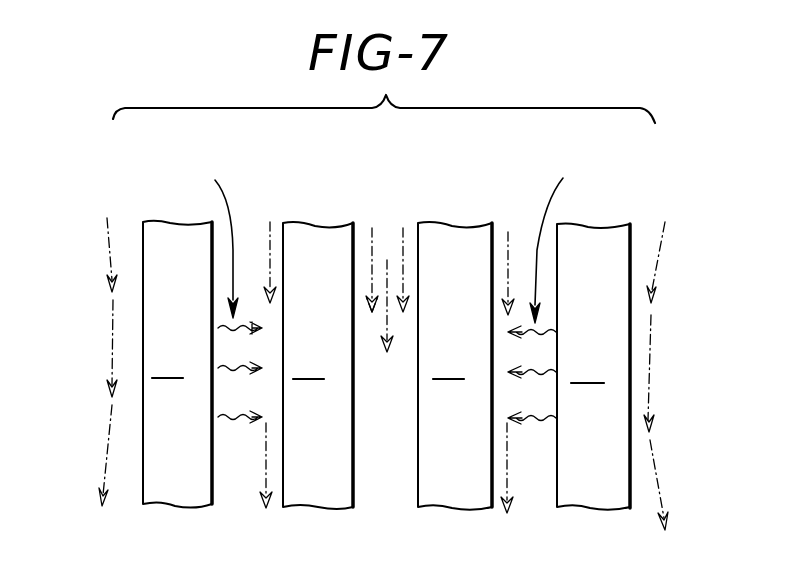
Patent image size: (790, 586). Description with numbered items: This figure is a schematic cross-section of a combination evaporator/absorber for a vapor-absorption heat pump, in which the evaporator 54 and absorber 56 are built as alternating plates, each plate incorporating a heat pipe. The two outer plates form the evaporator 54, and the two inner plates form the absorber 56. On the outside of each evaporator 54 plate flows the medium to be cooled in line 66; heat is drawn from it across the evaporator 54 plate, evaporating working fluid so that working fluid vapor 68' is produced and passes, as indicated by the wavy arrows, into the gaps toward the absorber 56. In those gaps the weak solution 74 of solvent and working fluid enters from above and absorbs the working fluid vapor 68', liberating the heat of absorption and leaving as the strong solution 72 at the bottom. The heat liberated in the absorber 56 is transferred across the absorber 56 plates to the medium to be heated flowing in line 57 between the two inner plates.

The evaporator 54 is at (160, 480).
The absorber 56 is at (437, 485).
The line carrying medium to be heated 57 is at (411, 217).
The line carrying medium to be cooled 66 is at (112, 318).
The working fluid vapor 68' is at (389, 293).
The strong solution 72 is at (265, 473).
The weak solution 74 is at (268, 270).